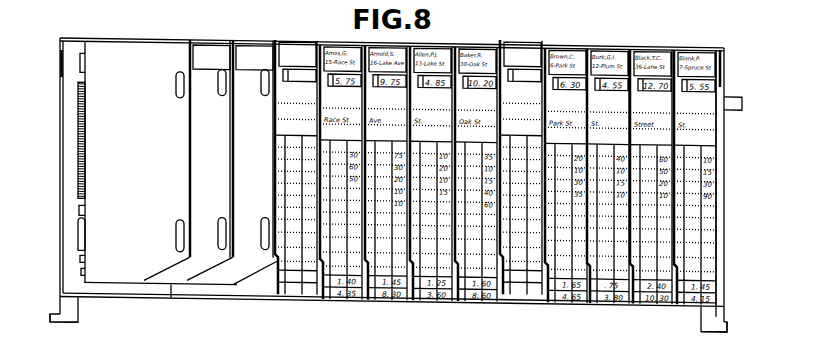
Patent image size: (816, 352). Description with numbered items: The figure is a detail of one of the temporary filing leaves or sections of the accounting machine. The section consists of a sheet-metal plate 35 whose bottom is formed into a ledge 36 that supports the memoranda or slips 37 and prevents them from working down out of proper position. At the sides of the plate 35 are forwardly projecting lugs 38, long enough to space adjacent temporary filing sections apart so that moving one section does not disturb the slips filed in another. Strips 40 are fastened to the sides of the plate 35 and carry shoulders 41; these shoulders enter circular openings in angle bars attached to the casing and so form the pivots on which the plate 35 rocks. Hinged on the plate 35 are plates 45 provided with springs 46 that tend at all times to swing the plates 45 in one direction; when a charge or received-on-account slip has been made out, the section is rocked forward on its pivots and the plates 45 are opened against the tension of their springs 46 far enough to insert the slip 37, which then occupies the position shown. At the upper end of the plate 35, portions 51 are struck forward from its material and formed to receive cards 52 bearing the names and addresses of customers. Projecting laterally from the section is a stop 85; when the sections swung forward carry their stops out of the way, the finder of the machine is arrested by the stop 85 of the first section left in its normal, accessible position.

The plate 35 is at (207, 292).
The ledge 36 is at (279, 302).
The memoranda or slips 37 is at (534, 303).
The forwardly projecting lugs 38 is at (62, 70).
The strips 40 is at (66, 303).
The shoulders 41 is at (50, 318).
The hinged plates 45 is at (165, 269).
The springs 46 is at (85, 154).
The struck-forward portions 51 is at (208, 43).
The cards 52 is at (231, 46).
The stop 85 is at (736, 109).